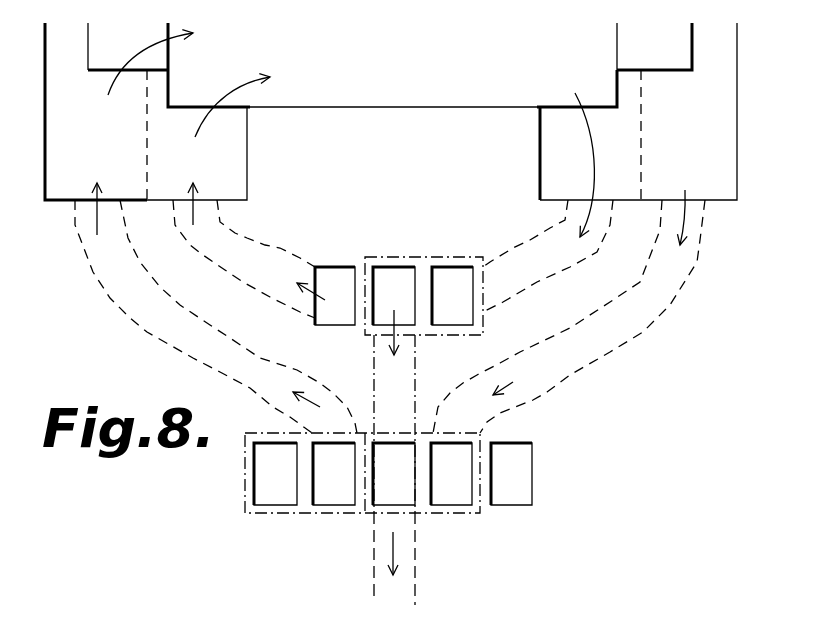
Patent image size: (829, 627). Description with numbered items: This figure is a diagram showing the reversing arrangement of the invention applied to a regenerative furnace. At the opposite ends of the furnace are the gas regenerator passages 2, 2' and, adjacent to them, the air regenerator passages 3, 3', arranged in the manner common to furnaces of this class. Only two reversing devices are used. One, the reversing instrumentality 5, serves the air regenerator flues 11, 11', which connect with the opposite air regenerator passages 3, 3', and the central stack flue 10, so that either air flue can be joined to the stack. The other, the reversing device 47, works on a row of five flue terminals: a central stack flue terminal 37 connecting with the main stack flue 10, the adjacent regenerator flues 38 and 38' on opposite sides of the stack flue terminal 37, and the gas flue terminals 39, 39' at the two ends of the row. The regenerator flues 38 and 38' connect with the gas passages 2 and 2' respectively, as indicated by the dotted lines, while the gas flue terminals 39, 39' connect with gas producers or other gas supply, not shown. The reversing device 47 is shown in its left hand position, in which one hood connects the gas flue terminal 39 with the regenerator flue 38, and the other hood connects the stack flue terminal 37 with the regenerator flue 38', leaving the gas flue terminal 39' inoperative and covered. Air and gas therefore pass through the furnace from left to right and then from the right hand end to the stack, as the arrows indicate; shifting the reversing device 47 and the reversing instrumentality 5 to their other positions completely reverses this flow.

The gas regenerator passage 2 is at (119, 129).
The air regenerator passage 3 is at (208, 124).
The gas regenerator passage 2' is at (677, 134).
The air regenerator passage 3' is at (589, 130).
The air regenerator flue 11 is at (249, 259).
The air regenerator flue 11' is at (540, 256).
The reversing instrumentality 5 is at (464, 333).
The central stack flue 10 is at (388, 390).
The reversing device 47 is at (240, 445).
The gas flue terminal 39 is at (275, 500).
The regenerator flue 38 is at (334, 500).
The central stack flue terminal 37 is at (407, 498).
The regenerator flue 38' is at (466, 499).
The gas flue terminal 39' is at (538, 475).